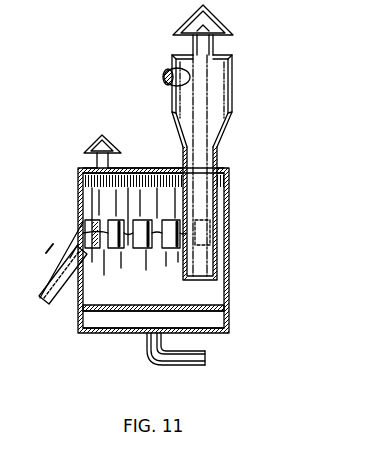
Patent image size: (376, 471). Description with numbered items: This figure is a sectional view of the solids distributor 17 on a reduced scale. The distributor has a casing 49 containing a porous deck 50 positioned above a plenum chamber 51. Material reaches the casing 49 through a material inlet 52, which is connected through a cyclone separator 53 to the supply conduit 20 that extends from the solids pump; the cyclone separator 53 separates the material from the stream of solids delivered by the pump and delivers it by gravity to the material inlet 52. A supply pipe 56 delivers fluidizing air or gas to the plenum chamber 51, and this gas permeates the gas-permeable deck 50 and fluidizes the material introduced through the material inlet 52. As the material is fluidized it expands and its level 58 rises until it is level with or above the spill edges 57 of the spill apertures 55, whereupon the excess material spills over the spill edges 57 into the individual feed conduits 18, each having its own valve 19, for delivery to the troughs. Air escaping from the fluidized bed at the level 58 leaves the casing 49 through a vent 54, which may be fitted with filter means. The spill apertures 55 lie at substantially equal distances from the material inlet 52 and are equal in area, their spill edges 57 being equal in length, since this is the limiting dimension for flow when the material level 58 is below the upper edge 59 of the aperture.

The material distributor 17 is at (236, 275).
The feed conduits 18 is at (45, 290).
The valves 19 is at (47, 249).
The supply conduit 20 is at (165, 77).
The casing 49 is at (226, 223).
The porous deck 50 is at (145, 306).
The plenum chamber 51 is at (110, 320).
The material inlet 52 is at (205, 190).
The cyclone separator 53 is at (233, 82).
The vent 54 is at (99, 140).
The spill apertures 55 is at (88, 222).
The supply pipe 56 is at (199, 352).
The spill edges 57 is at (170, 222).
The material level 58 is at (140, 222).
The upper edge 59 is at (116, 222).